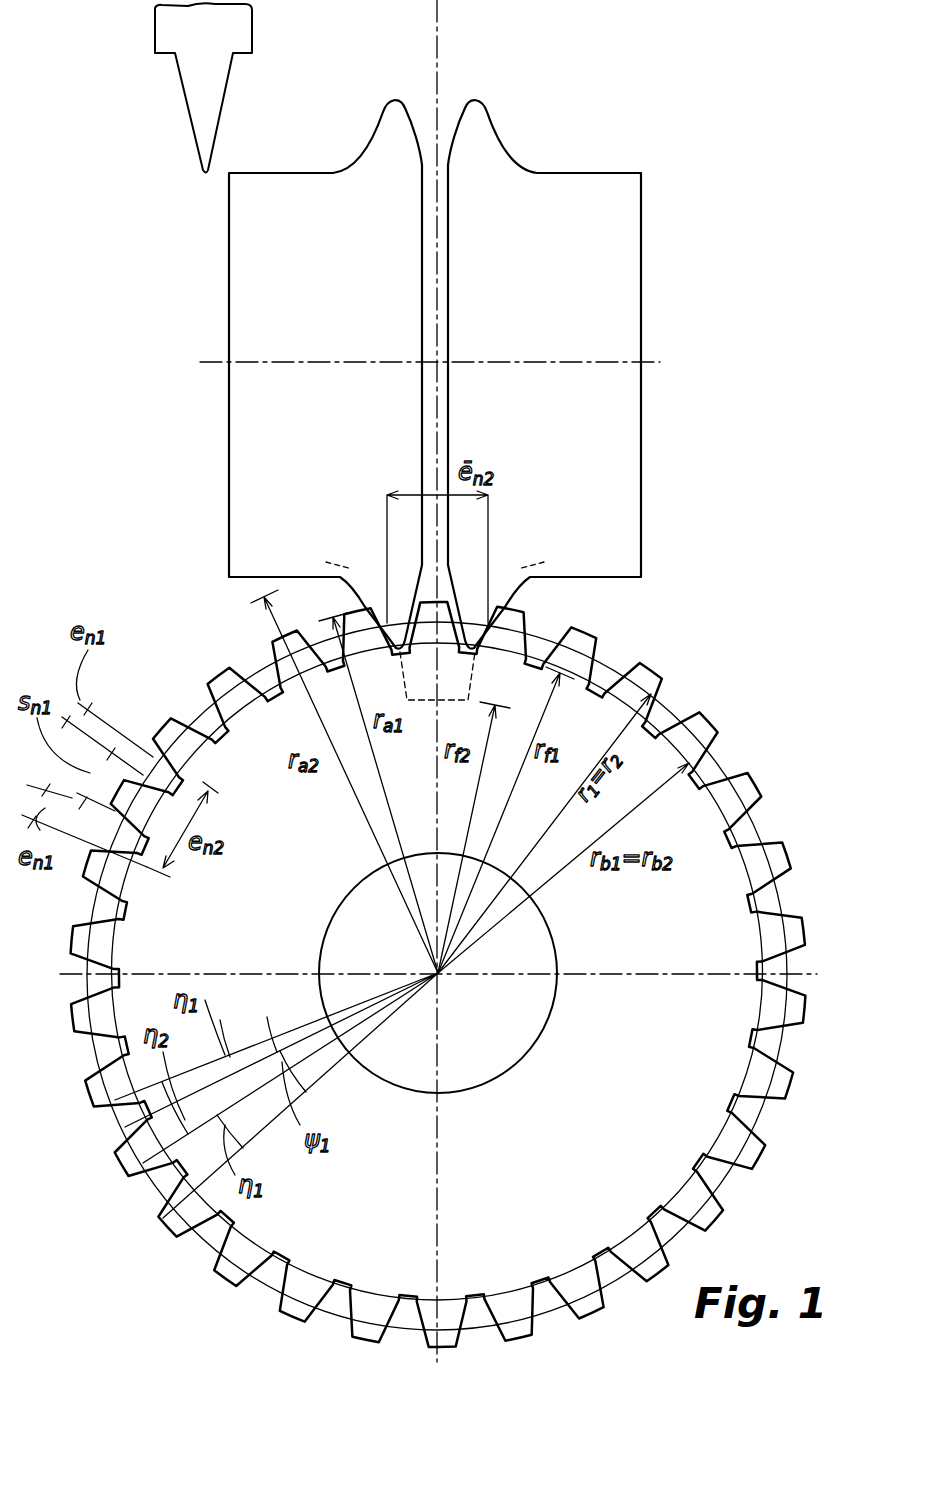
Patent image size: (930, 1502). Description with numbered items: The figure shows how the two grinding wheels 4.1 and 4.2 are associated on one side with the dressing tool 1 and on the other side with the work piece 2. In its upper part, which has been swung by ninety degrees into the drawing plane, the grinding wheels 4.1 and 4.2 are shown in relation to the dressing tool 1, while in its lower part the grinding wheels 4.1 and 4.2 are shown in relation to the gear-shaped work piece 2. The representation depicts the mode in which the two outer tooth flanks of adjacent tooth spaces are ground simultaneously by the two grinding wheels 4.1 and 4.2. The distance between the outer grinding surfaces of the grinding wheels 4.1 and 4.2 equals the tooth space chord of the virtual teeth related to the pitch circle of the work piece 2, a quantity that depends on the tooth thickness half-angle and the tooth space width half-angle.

The dressing tool 1 is at (187, 70).
The work piece 2 is at (752, 792).
The grinding wheel 4.1 is at (230, 304).
The grinding wheel 4.2 is at (640, 304).